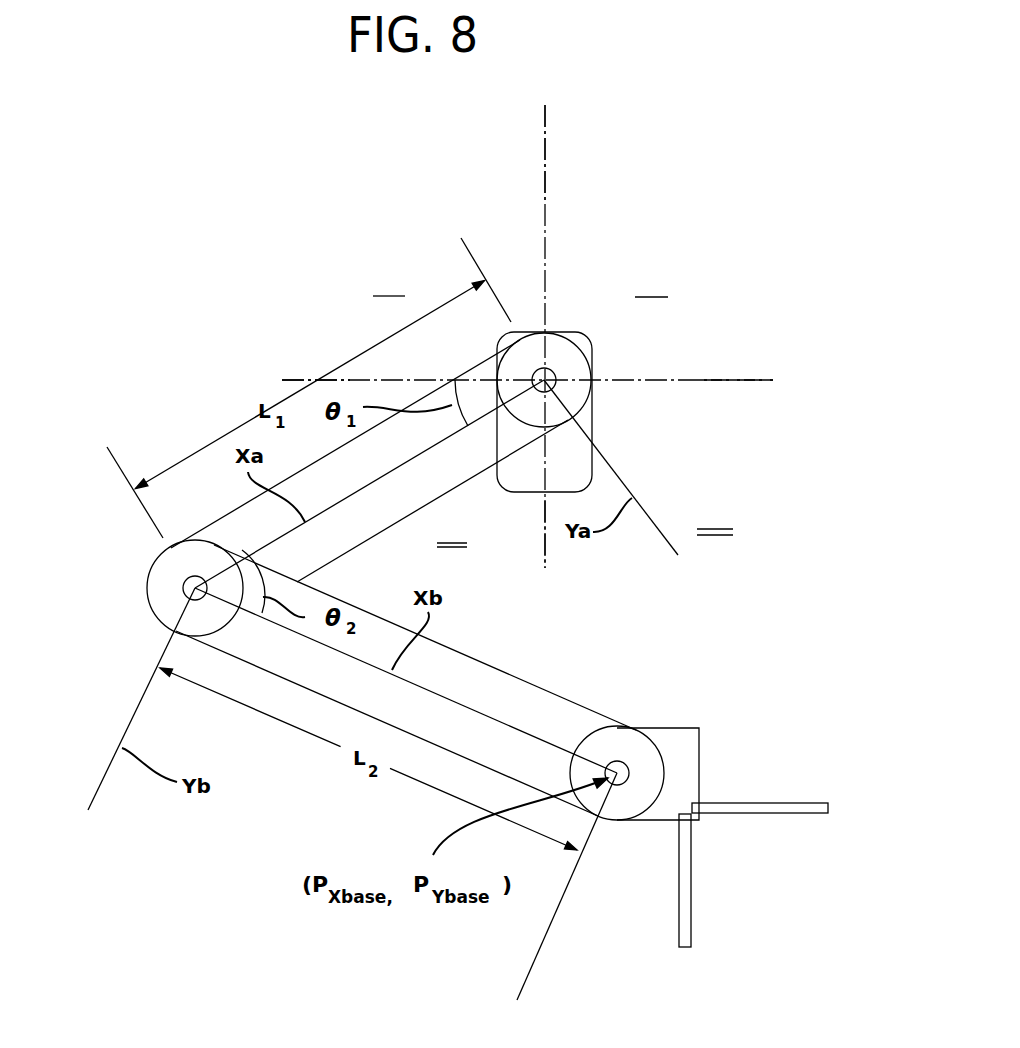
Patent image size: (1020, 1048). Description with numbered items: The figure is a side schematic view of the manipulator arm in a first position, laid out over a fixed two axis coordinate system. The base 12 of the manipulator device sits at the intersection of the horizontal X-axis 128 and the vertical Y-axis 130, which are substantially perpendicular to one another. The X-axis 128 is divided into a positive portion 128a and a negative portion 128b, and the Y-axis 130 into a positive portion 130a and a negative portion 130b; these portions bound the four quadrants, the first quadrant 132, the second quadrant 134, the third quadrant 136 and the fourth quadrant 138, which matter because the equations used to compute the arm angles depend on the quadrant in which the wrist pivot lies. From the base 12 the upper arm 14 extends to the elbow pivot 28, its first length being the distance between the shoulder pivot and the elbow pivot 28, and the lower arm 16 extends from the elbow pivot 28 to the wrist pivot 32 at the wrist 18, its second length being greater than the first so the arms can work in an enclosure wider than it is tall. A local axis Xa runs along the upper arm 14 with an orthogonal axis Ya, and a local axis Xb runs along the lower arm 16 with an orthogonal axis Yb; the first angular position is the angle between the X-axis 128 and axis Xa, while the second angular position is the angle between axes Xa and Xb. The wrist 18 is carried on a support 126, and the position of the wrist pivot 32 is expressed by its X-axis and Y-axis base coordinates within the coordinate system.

The base 12 is at (593, 407).
The upper arm 14 is at (243, 517).
The lower arm 16 is at (507, 695).
The wrist 18 is at (620, 737).
The elbow pivot 28 is at (182, 583).
The wrist pivot 32 is at (623, 783).
The base bracket 126 is at (687, 878).
The horizontal reference axis 128 is at (698, 382).
The positive portion of the X-axis 128a is at (740, 380).
The negative horizontal axis 128b is at (298, 377).
The Y-axis 130 is at (544, 221).
The positive portion of the Y-axis 130a is at (544, 147).
The negative portion of the Y-axis 130b is at (545, 553).
The first quadrant 132 is at (663, 282).
The second quadrant 134 is at (375, 273).
The third quadrant 136 is at (468, 528).
The fourth quadrant 138 is at (735, 515).